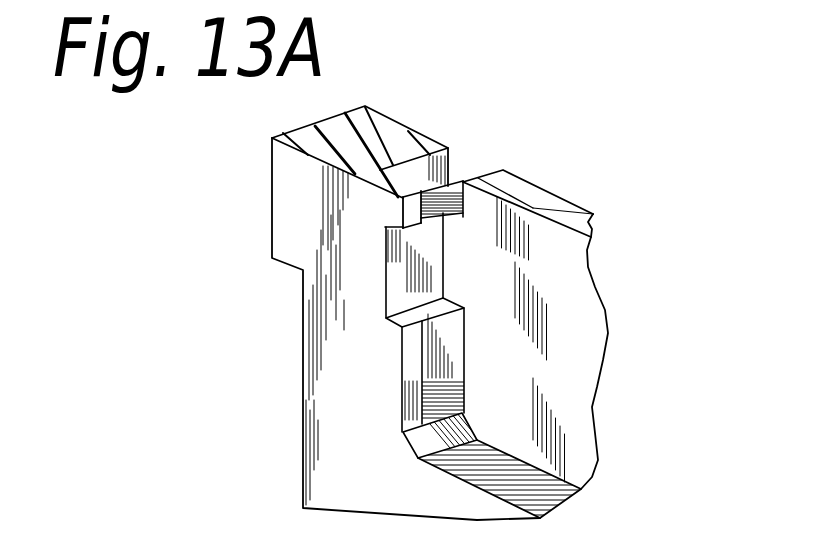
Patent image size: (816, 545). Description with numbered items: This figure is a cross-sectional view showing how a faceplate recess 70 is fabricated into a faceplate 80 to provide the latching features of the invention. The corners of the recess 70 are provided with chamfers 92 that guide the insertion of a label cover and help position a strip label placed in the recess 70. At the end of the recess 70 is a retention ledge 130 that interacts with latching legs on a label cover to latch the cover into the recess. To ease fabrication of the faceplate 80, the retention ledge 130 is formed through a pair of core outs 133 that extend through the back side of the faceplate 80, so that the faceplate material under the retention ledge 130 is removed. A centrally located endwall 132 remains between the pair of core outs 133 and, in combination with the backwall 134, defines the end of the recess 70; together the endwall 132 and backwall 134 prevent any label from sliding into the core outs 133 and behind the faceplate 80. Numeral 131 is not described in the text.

The faceplate recess 70 is at (573, 289).
The faceplate 80 is at (287, 223).
The chamfers 92 is at (425, 443).
The retention ledge 130 is at (415, 365).
The tab 131 is at (457, 249).
The centrally located endwall 132 is at (400, 288).
The core outs 133 is at (470, 166).
The backwall 134 is at (530, 208).